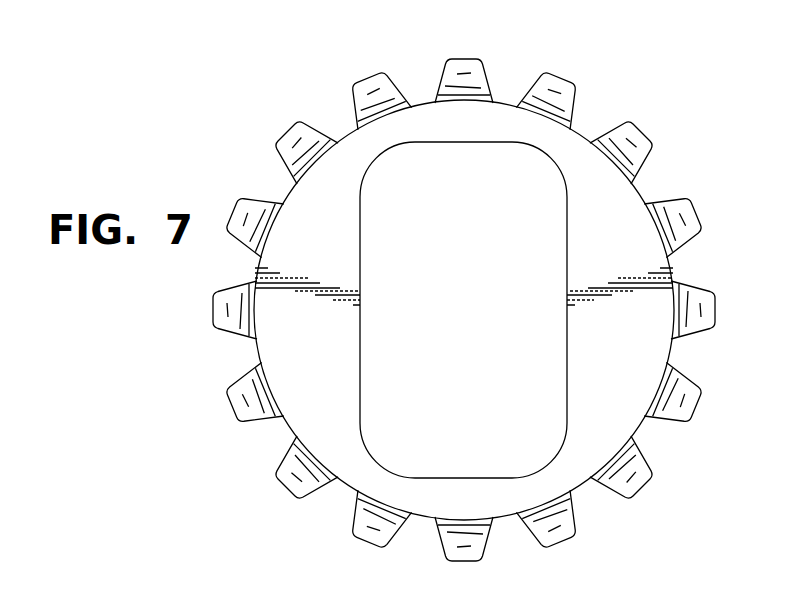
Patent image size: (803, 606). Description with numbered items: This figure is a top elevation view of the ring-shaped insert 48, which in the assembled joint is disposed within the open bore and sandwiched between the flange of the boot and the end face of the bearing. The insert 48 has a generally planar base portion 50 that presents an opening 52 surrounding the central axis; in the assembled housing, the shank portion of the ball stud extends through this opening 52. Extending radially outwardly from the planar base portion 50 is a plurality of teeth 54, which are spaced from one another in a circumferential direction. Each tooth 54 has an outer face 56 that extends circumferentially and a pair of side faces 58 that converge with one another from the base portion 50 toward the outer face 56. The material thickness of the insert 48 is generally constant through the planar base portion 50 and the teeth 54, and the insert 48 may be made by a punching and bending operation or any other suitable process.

The insert 48 is at (260, 513).
The planar base portion 50 is at (323, 203).
The opening 52 is at (455, 200).
The teeth 54 is at (287, 468).
The outer face 56 is at (460, 563).
The side faces 58 is at (655, 468).